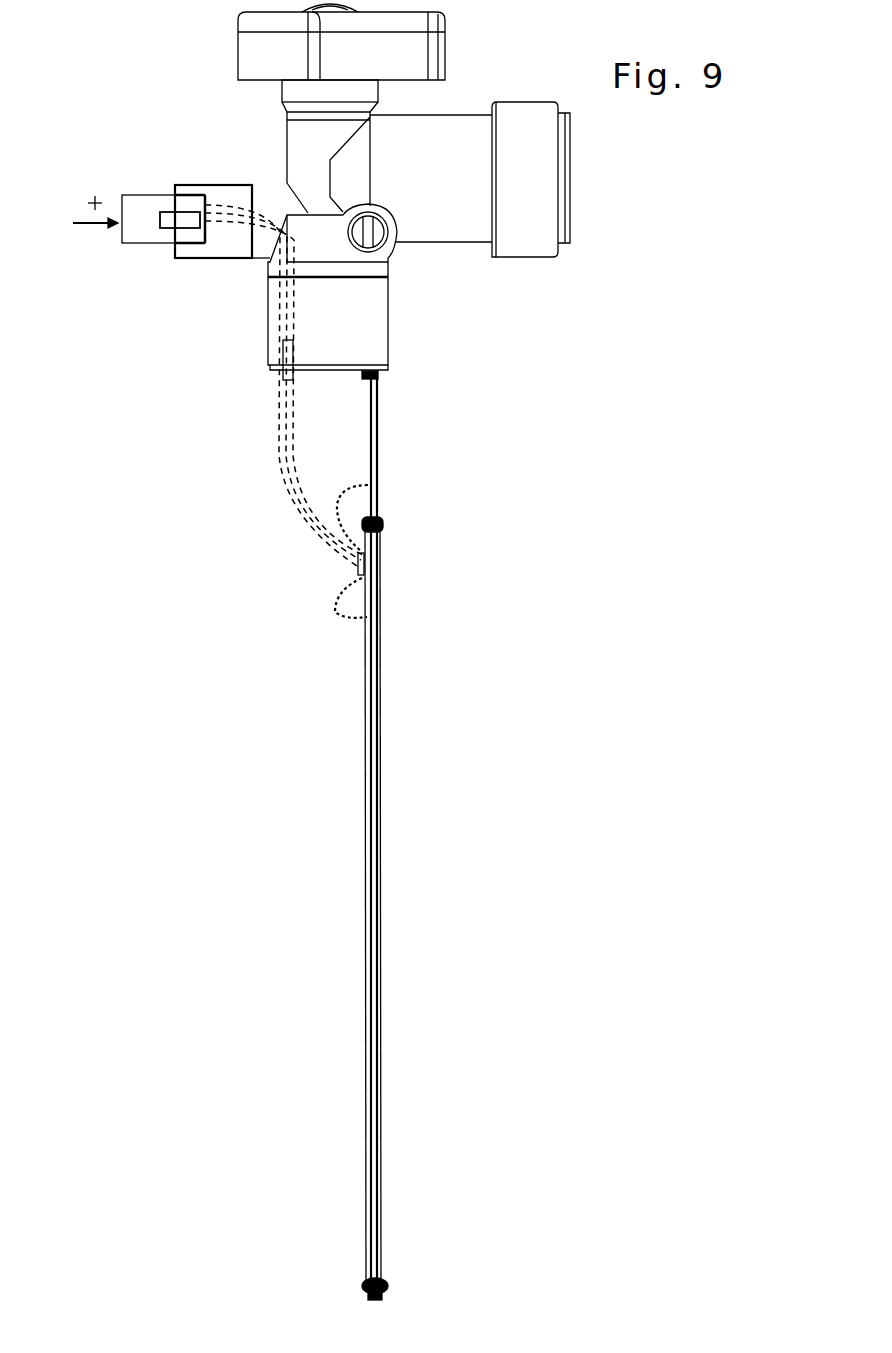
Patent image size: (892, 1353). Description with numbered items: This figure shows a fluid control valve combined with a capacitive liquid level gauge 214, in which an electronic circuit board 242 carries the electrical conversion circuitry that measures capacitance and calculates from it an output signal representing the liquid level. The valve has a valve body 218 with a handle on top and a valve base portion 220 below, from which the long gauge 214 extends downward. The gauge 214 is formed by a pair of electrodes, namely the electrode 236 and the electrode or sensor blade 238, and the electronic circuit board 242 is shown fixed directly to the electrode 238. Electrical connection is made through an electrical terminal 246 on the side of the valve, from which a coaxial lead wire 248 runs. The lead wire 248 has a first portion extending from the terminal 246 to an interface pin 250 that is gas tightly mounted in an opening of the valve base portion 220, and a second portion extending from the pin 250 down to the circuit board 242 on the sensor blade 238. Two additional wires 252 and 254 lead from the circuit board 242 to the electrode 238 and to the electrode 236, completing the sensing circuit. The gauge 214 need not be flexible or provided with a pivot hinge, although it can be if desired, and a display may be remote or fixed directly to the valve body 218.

The gauge 214 is at (328, 865).
The valve body 218 is at (305, 155).
The valve base portion 220 is at (362, 332).
The electrode 236 is at (378, 993).
The electrode or sensor blade 238 is at (365, 1000).
The electronic circuit board 242 is at (358, 570).
The electrical terminal 246 is at (167, 220).
The coaxial lead wire 248 is at (268, 227).
The interface pin 250 is at (290, 357).
The wire 252 is at (362, 617).
The wire 254 is at (347, 493).